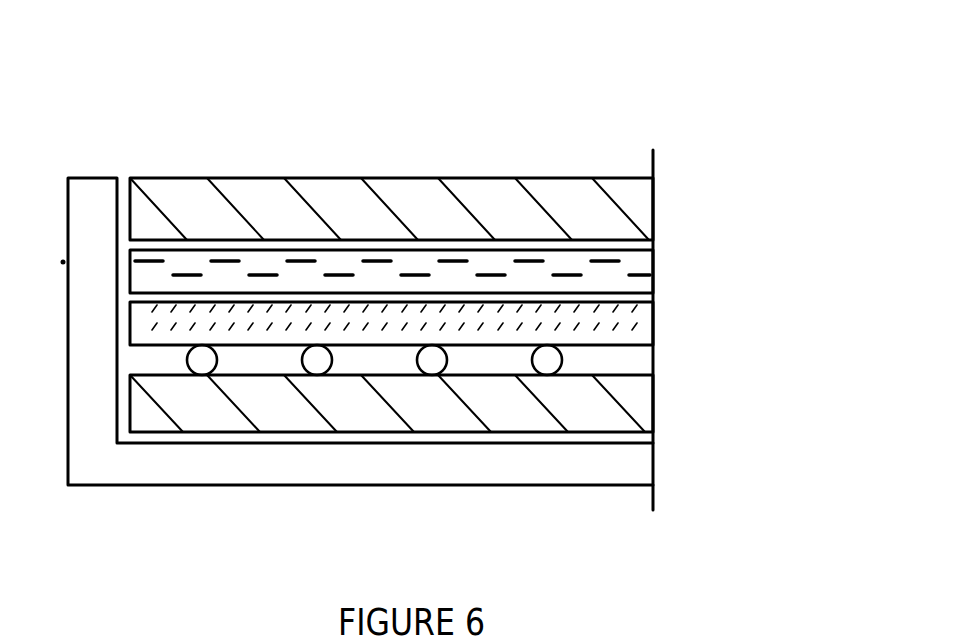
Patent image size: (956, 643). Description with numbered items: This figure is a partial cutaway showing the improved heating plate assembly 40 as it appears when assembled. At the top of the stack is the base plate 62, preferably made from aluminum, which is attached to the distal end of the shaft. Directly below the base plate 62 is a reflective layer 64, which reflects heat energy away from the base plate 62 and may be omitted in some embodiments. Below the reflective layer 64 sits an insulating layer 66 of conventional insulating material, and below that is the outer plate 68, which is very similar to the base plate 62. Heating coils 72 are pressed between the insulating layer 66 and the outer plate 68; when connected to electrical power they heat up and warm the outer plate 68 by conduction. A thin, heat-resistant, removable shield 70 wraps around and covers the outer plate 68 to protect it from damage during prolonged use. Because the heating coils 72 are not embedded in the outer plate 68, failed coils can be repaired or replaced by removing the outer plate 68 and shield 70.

The heating plate assembly 40 is at (158, 102).
The base plate 62 is at (472, 188).
The reflective layer 64 is at (645, 258).
The insulating layer 66 is at (597, 336).
The outer plate 68 is at (633, 403).
The shield 70 is at (292, 470).
The heating coils 72 is at (555, 362).